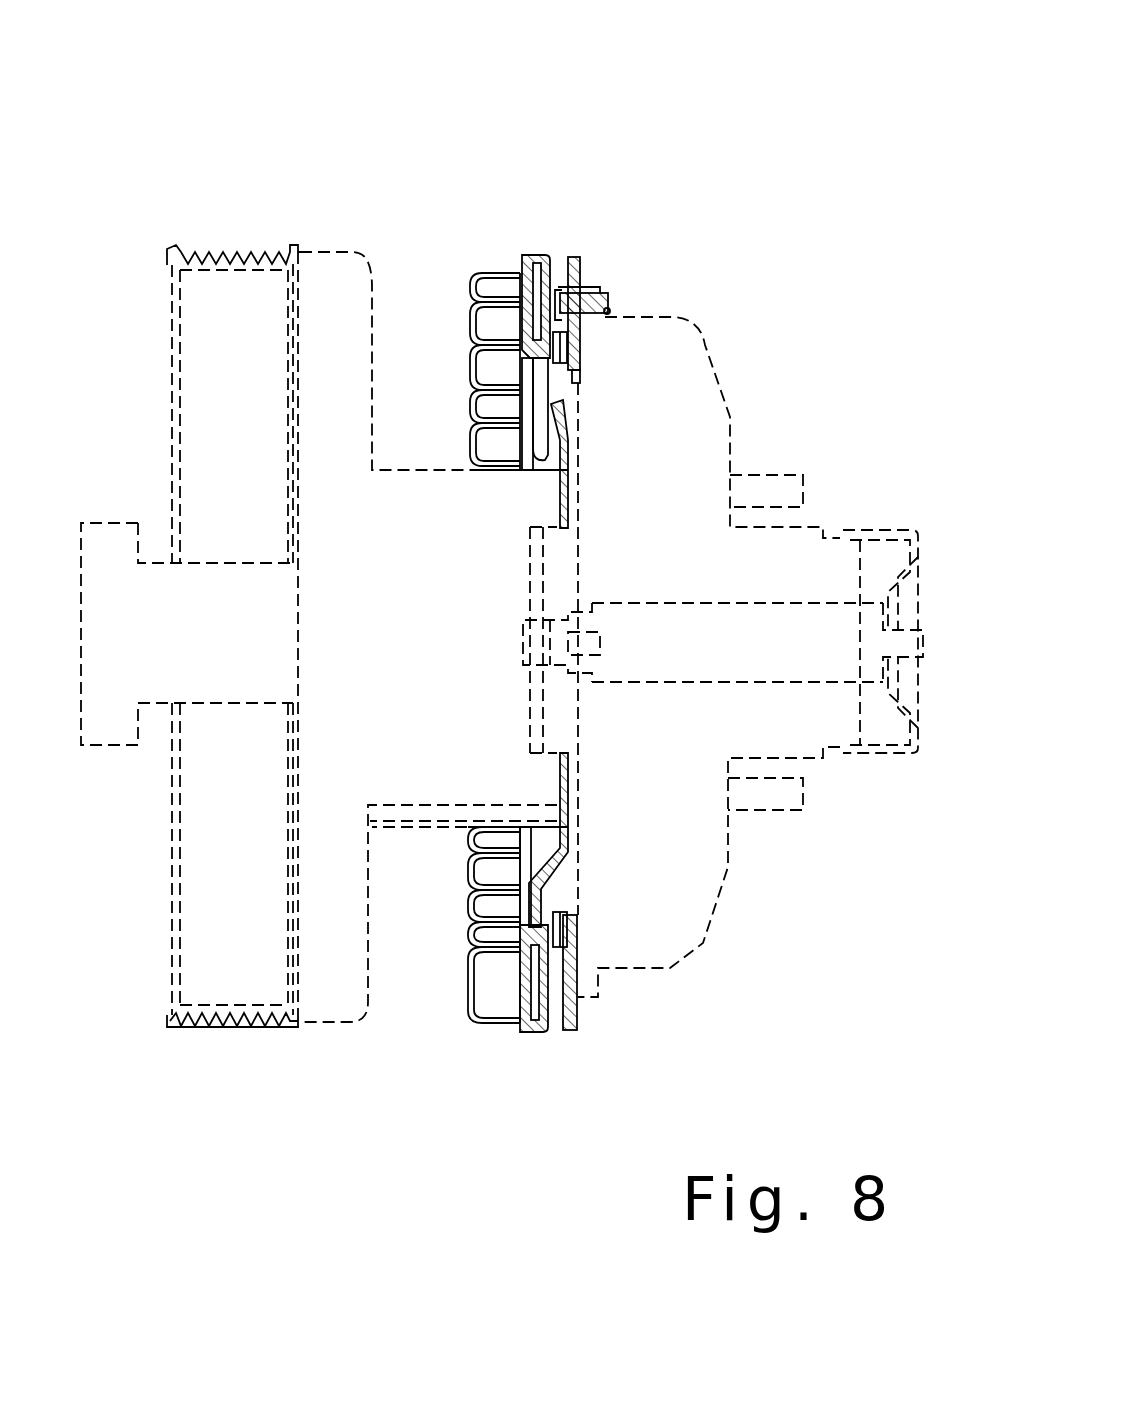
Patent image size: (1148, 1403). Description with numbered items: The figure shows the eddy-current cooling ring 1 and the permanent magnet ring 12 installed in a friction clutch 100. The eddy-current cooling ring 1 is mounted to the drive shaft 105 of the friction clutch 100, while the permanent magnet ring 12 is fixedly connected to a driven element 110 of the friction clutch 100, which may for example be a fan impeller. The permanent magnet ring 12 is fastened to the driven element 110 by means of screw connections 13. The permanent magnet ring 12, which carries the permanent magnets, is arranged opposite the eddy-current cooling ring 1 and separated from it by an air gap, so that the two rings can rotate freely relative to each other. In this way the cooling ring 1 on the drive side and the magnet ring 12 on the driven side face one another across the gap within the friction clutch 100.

The friction clutch 100 is at (497, 137).
The eddy-current cooling ring 1 is at (496, 261).
The permanent magnet ring 12 is at (588, 270).
The screw connections 13 is at (612, 302).
The drive shaft 105 is at (141, 456).
The driven element 110 is at (776, 438).